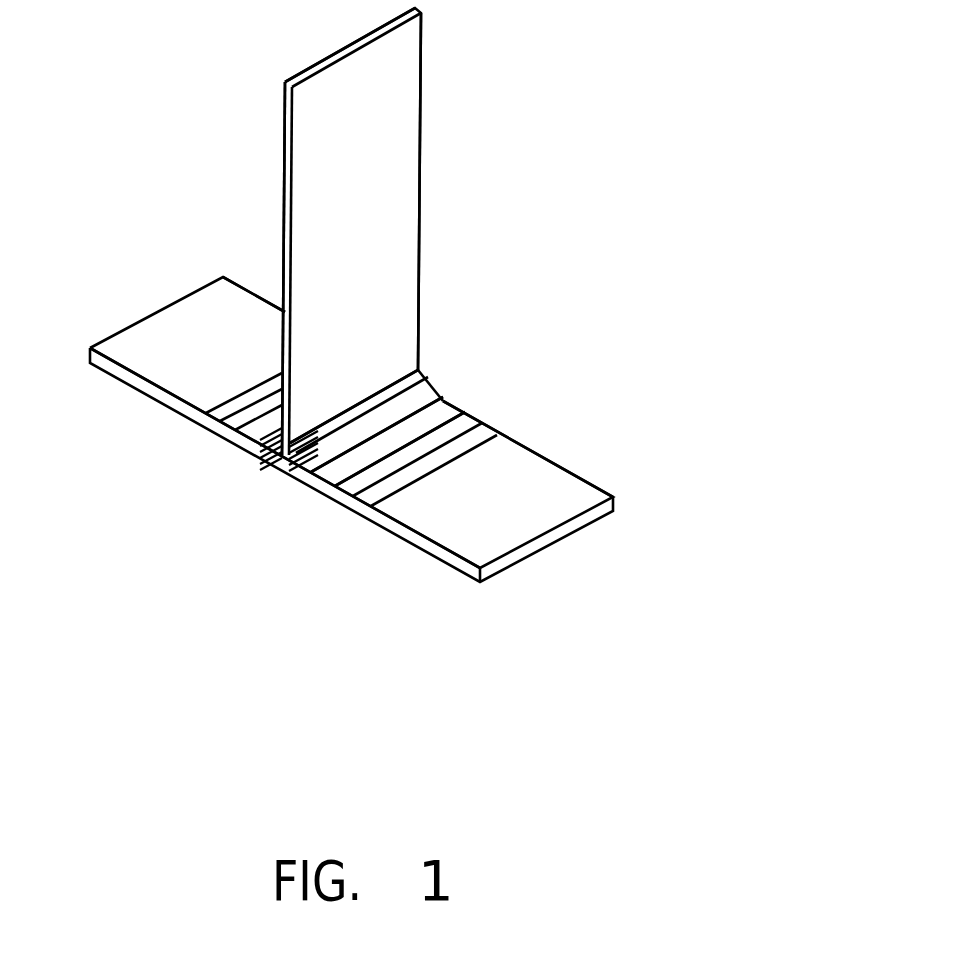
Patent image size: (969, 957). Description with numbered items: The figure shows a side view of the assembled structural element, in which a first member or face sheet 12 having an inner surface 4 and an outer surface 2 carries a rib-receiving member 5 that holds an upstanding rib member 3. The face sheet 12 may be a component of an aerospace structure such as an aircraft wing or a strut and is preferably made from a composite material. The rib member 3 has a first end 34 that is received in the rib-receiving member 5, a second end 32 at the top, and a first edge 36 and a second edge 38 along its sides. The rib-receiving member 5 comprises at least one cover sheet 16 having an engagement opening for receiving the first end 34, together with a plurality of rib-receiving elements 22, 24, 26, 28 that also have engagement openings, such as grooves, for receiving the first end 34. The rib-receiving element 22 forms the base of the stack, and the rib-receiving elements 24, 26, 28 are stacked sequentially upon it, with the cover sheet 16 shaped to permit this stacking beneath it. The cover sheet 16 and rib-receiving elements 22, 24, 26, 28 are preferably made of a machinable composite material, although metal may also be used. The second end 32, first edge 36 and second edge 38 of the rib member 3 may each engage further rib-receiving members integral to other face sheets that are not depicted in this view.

The outer surface 2 is at (540, 551).
The rib member 3 is at (411, 247).
The inner surface 4 is at (191, 325).
The rib-receiving member 5 is at (432, 372).
The face sheet 12 is at (150, 391).
The cover sheet 16 is at (413, 394).
The rib-receiving element 22 is at (312, 482).
The rib-receiving element 24 is at (293, 470).
The rib-receiving element 26 is at (272, 461).
The rib-receiving element 28 is at (266, 446).
The second end 32 is at (377, 52).
The first end 34 is at (400, 368).
The first edge 36 is at (283, 182).
The second edge 38 is at (421, 146).